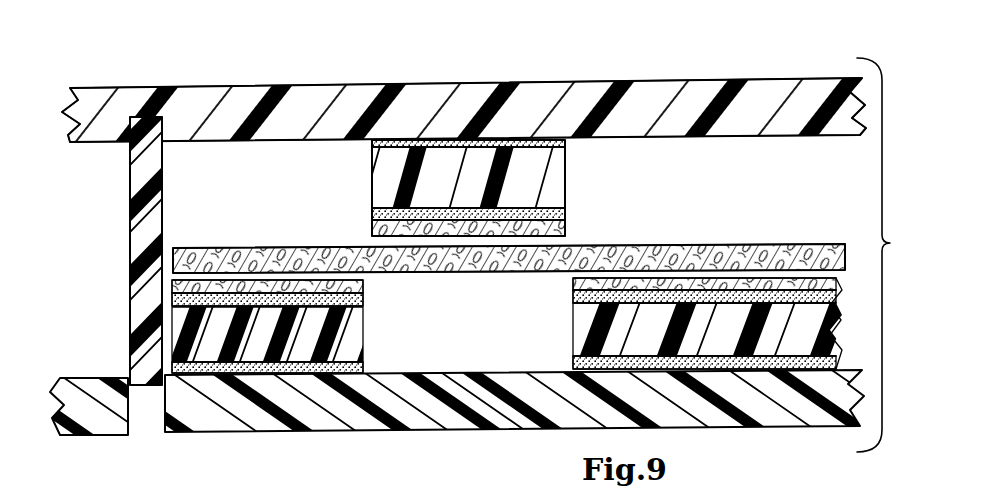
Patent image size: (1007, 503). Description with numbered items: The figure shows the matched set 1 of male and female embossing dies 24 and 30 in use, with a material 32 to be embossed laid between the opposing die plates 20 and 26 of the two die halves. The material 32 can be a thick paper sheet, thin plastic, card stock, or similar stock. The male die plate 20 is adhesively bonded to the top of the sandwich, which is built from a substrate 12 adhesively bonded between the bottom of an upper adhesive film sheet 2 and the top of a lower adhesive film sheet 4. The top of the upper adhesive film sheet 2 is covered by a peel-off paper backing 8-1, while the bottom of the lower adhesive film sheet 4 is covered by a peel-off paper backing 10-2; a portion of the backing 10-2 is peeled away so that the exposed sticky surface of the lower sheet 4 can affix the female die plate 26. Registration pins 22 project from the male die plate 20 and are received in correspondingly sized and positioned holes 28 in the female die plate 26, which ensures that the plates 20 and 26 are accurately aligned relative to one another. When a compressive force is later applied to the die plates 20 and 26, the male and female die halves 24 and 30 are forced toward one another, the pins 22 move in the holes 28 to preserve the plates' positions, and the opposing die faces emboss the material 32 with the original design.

The matched set of male and female embossing dies 1 is at (884, 255).
The upper adhesive film sheet 2 is at (372, 145).
The lower adhesive film sheet 4 is at (372, 216).
The peel-off paper backing 8-1 is at (272, 290).
The peel-off paper backing 10-2 is at (565, 222).
The substrate 12 is at (390, 170).
The male die plate 20 is at (423, 93).
The registration pins 22 is at (150, 212).
The male embossing die 24 is at (603, 76).
The female die plate 26 is at (390, 420).
The holes 28 is at (130, 410).
The female embossing die 30 is at (332, 443).
The material to be embossed 32 is at (643, 247).